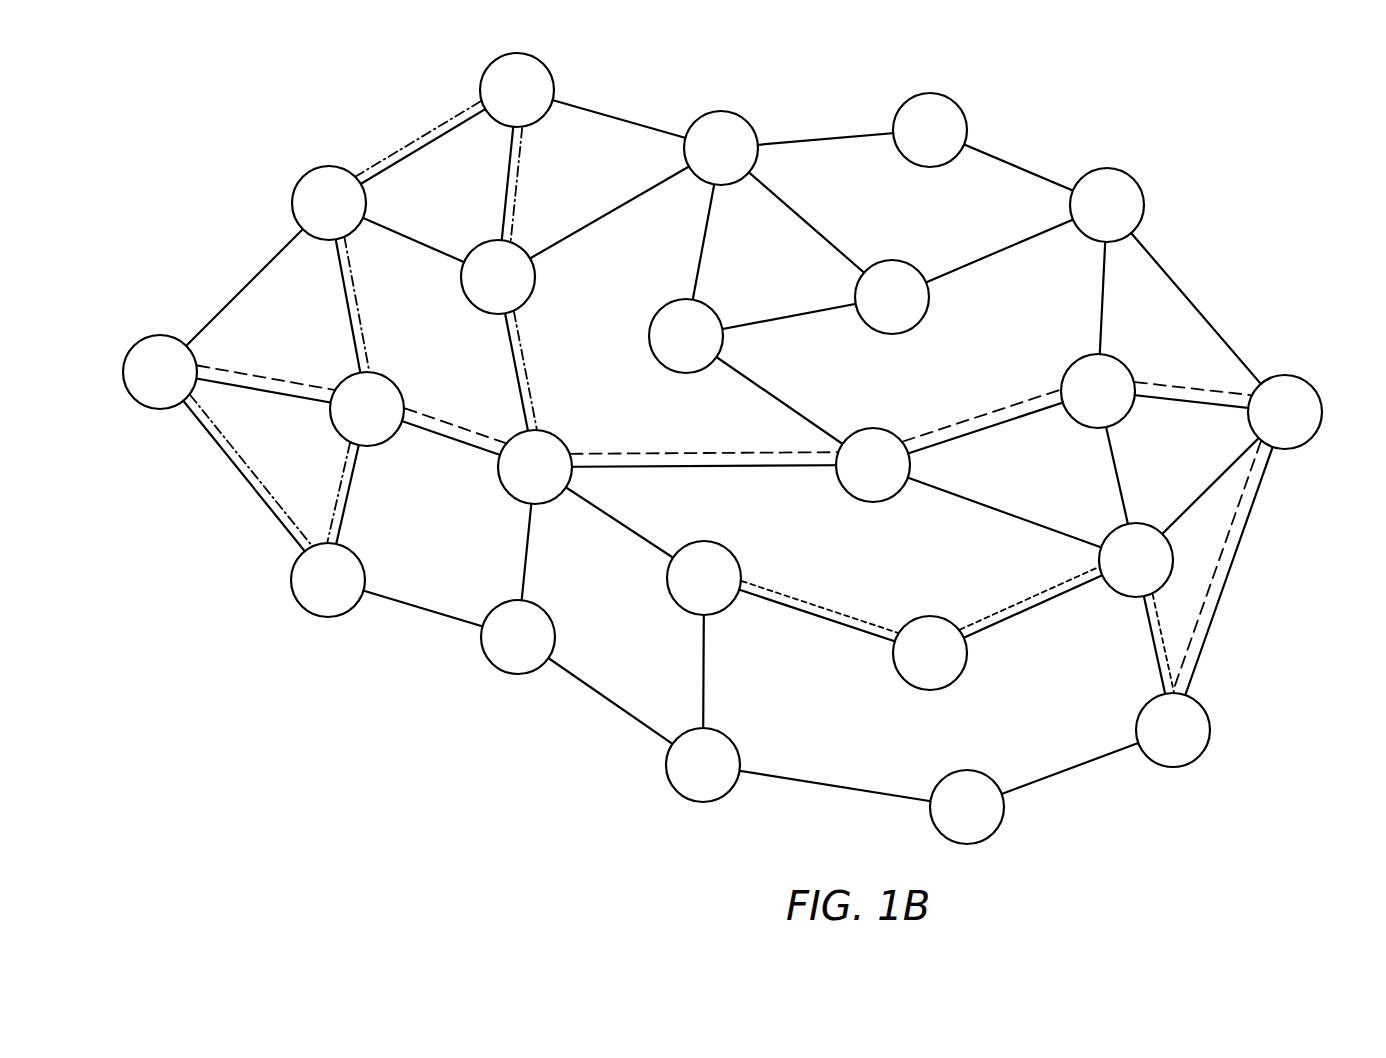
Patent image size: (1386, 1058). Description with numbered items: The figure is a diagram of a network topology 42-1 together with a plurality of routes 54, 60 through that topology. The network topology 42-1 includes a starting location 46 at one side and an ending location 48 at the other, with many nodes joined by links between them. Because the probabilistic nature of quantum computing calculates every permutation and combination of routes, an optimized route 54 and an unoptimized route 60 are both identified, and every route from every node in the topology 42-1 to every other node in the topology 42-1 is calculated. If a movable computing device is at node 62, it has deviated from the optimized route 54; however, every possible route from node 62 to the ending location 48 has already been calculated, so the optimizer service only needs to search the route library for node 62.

The network topology 42-1 is at (1209, 83).
The starting location 46 is at (124, 369).
The ending location 48 is at (1320, 398).
The optimized route 54 is at (680, 452).
The unoptimized route 60 is at (523, 362).
The node 62 is at (734, 554).